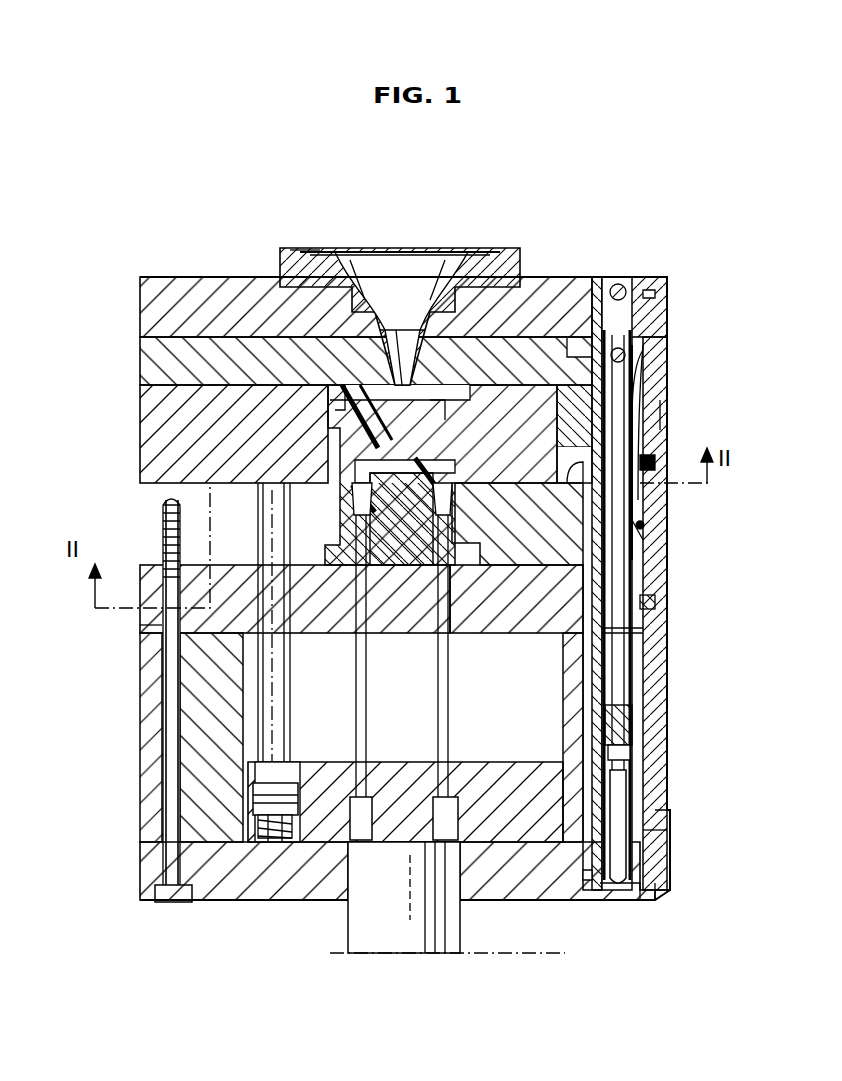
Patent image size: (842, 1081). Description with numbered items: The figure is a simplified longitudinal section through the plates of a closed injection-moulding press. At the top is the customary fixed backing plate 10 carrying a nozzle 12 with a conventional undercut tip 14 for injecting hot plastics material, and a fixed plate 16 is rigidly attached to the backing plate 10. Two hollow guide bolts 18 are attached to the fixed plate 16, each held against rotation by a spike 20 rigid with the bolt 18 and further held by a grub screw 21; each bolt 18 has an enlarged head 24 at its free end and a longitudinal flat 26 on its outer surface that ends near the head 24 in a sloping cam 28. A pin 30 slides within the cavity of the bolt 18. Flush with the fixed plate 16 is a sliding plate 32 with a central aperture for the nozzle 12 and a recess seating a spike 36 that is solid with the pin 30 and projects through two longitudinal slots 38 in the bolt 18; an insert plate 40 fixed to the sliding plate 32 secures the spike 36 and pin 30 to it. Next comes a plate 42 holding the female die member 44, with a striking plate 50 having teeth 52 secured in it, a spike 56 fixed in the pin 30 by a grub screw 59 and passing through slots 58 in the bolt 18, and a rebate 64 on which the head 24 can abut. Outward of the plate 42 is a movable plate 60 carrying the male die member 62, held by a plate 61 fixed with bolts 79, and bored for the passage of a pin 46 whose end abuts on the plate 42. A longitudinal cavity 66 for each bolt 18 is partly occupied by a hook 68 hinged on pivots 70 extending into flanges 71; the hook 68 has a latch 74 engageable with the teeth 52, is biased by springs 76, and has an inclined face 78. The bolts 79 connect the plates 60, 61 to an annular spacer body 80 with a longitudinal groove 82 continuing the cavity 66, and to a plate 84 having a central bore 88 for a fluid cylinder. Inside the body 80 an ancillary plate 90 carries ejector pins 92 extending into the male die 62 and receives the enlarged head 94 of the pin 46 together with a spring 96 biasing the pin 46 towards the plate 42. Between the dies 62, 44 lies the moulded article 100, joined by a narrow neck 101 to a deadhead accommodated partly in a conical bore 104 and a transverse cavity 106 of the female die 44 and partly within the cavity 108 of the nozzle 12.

The fixed backing plate 10 is at (305, 250).
The nozzle 12 is at (450, 275).
The undercut tip 14 is at (425, 380).
The fixed plate 16 is at (150, 302).
The hollow guide bolt 18 is at (655, 830).
The spike 20 is at (624, 277).
The grub screw 21 is at (655, 292).
The enlarged head 24 is at (598, 888).
The longitudinal flat 26 is at (650, 684).
The sloping cam 28 is at (660, 810).
The pin 30 is at (632, 640).
The sliding plate 32 is at (152, 360).
The spike 36 is at (650, 356).
The longitudinal slots 38 is at (650, 380).
The insert plate 40 is at (650, 345).
The plate 42 is at (158, 440).
The female member 44 is at (460, 440).
The pin 46 is at (275, 684).
The striking plate 50 is at (565, 416).
The teeth 52 is at (652, 452).
The spike 56 is at (640, 722).
The longitudinal slots 58 is at (632, 785).
The grub screw 59 is at (640, 768).
The movable plate 60 is at (162, 535).
The plate 61 is at (150, 625).
The male die member 62 is at (400, 552).
The rebate 64 is at (580, 465).
The longitudinal cavity 66 is at (572, 628).
The hook 68 is at (650, 510).
The pivots 70 is at (645, 527).
The flanges 71 is at (650, 560).
The latch 74 is at (652, 424).
The springs 76 is at (655, 603).
The inclined face 78 is at (650, 402).
The bolts 79 is at (165, 783).
The annular body 80 is at (160, 725).
The longitudinal groove 82 is at (580, 738).
The plate 84 is at (148, 870).
The central bore 88 is at (445, 895).
The ancillary plate 90 is at (312, 776).
The ejector pins 92 is at (360, 716).
The enlarged head 94 is at (260, 792).
The spring 96 is at (262, 830).
The moulded article 100 is at (350, 475).
The narrow neck 101 is at (355, 450).
The conical bore 104 is at (372, 437).
The transverse cavity 106 is at (405, 392).
The cavity of the nozzle 108 is at (380, 300).